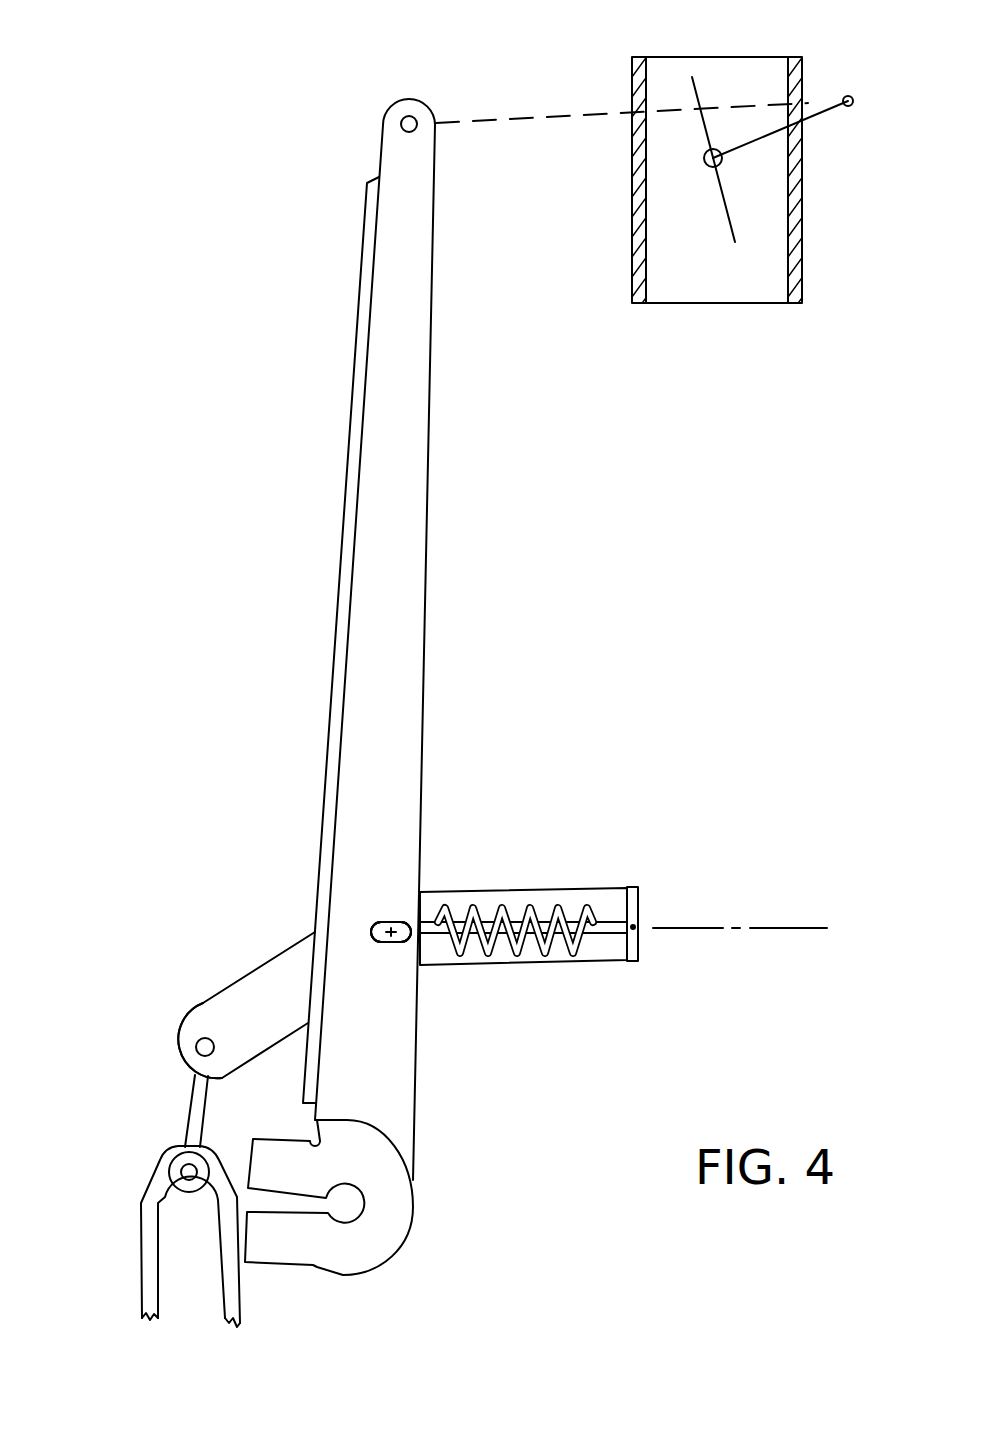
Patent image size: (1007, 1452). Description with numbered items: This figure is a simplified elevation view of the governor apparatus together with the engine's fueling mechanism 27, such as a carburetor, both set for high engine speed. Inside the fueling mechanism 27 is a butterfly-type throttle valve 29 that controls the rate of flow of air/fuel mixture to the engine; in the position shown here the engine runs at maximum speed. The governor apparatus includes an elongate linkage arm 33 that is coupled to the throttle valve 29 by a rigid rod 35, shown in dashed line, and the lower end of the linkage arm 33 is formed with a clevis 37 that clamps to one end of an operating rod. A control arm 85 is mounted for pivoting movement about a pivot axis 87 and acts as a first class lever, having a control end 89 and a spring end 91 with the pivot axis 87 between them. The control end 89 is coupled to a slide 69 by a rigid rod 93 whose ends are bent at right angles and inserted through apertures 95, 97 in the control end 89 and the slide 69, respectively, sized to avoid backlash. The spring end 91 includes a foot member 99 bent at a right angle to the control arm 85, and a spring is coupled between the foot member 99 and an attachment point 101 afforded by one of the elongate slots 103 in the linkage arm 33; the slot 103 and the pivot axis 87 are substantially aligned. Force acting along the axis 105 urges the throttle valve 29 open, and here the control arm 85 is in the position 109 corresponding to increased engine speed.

The fueling mechanism 27 is at (820, 162).
The throttle valve 29 is at (733, 231).
The linkage arm 33 is at (427, 613).
The rigid rod 35 is at (482, 120).
The clevis 37 is at (413, 1225).
The slide 69 is at (140, 1240).
The control arm 85 is at (272, 958).
The pivot axis 87 is at (408, 920).
The control end 89 is at (180, 1027).
The spring end 91 is at (606, 962).
The rigid rod 93 is at (188, 1098).
The aperture 95 is at (196, 1047).
The aperture 97 is at (188, 1172).
The foot member 99 is at (635, 887).
The attachment point 101 is at (404, 942).
The elongate slot 103 is at (374, 928).
The axis 105 is at (773, 925).
The position 109 is at (575, 897).